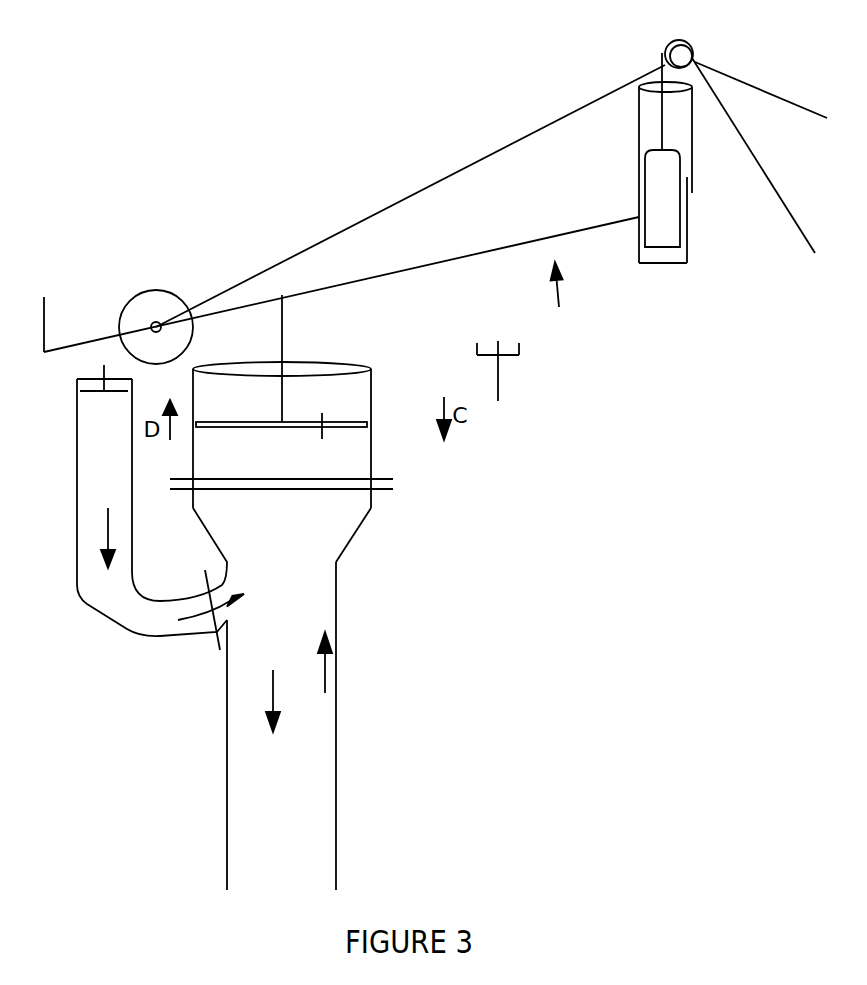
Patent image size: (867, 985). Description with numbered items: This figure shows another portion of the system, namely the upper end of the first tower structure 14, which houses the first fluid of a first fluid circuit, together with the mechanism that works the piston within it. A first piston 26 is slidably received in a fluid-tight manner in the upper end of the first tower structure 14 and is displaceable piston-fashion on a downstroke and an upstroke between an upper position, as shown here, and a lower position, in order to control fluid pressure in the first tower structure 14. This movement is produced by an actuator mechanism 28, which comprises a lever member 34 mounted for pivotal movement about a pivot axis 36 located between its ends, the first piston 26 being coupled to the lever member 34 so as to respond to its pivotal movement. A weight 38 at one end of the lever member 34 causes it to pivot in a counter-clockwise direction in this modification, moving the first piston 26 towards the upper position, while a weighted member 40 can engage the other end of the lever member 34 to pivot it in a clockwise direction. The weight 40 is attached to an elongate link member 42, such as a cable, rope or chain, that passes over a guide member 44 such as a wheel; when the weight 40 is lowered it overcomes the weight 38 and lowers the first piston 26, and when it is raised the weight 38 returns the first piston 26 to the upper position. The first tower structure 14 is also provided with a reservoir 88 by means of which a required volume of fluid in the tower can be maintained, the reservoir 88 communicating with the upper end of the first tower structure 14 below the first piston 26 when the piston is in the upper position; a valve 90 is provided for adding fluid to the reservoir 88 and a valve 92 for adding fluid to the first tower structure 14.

The first tower structure 14 is at (320, 743).
The first piston 26 is at (228, 428).
The actuator mechanism 28 is at (562, 299).
The lever member 34 is at (400, 268).
The pivot axis 36 is at (155, 322).
The weight 38 is at (44, 317).
The weighted member 40 is at (660, 192).
The link member 42 is at (763, 170).
The guide member 44 is at (688, 44).
The reservoir 88 is at (93, 486).
The valve 90 is at (103, 366).
The valve 92 is at (217, 643).